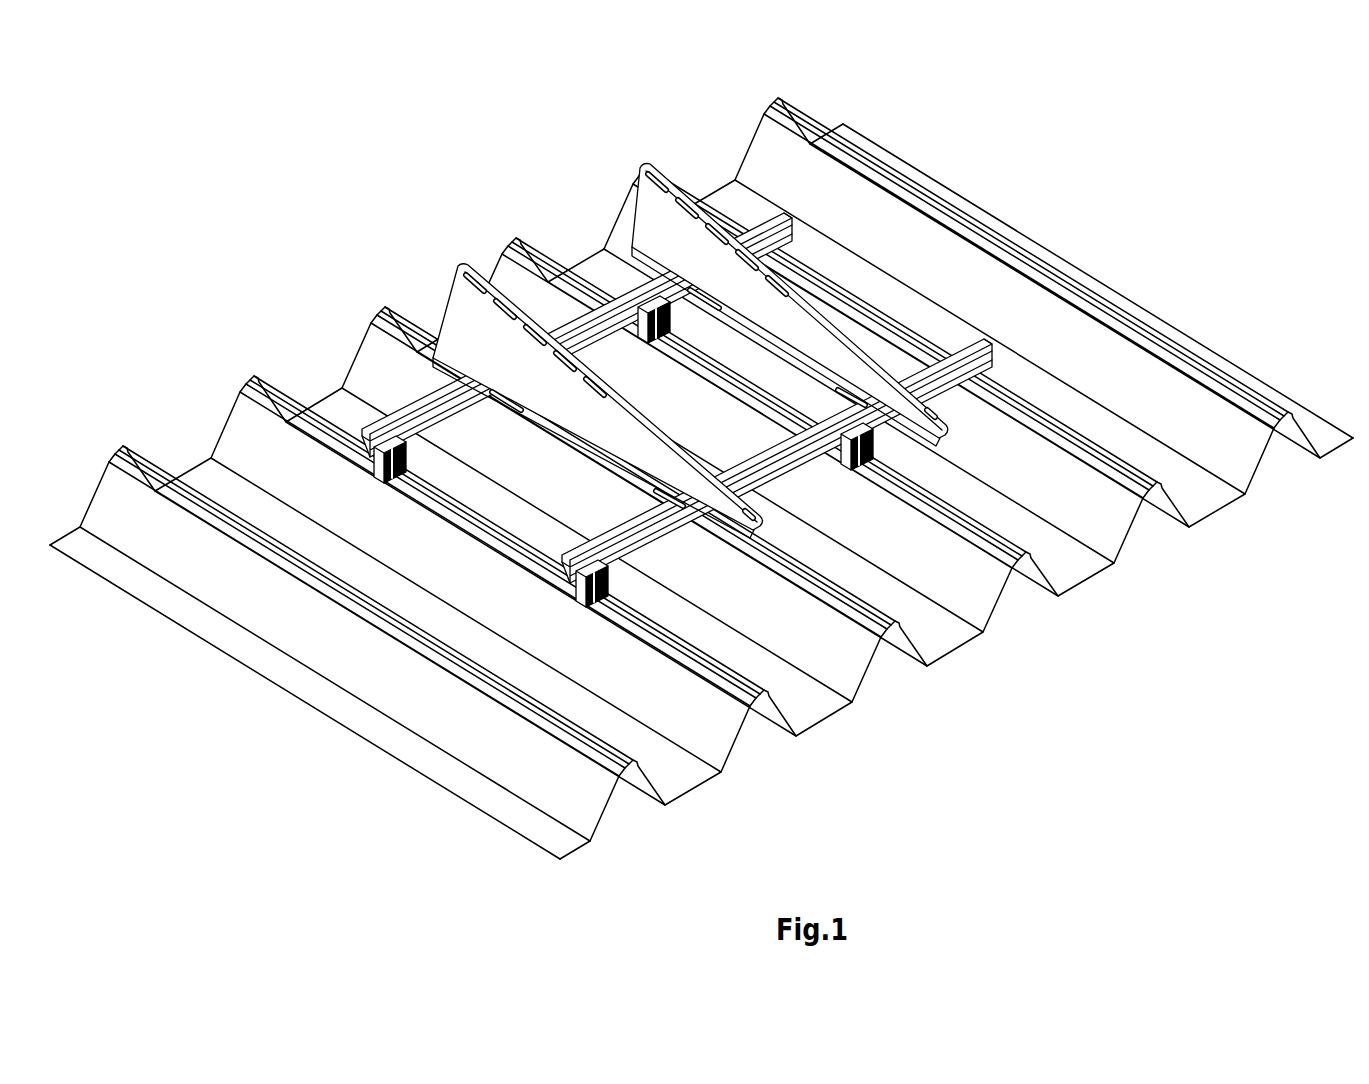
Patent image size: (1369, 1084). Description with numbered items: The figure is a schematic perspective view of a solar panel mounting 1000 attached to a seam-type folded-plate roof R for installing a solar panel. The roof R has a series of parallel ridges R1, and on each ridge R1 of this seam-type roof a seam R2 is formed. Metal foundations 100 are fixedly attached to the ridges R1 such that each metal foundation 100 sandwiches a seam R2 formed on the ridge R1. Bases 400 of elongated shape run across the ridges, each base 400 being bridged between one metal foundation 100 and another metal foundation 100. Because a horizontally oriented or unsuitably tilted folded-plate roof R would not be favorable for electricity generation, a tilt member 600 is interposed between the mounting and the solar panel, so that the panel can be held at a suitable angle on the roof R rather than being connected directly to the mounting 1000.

The solar panel mounting 1000 is at (625, 459).
The metal foundation 100 is at (657, 337).
The base 400 is at (400, 428).
The tilt member 600 is at (470, 318).
The folded-plate roof R is at (701, 480).
The ridge R1 is at (740, 690).
The seam R2 is at (708, 658).